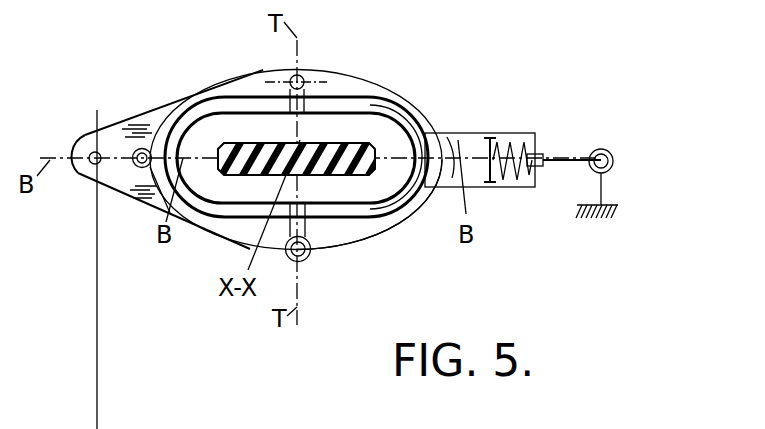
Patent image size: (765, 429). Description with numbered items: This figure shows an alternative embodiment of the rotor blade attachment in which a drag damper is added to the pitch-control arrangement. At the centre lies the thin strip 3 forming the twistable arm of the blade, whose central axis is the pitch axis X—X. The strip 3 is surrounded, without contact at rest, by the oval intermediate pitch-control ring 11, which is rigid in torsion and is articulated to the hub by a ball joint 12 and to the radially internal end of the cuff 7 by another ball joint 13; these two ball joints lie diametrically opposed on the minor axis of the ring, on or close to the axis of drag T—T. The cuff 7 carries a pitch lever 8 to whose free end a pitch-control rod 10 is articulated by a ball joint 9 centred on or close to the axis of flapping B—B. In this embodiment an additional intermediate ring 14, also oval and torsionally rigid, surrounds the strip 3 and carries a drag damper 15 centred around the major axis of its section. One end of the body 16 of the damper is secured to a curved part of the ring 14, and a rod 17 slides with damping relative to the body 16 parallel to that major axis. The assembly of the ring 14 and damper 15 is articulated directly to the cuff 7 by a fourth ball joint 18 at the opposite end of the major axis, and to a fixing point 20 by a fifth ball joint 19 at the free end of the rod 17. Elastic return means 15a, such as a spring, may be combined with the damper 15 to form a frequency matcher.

The thin strip 3 is at (233, 174).
The cuff 7 is at (381, 80).
The pitch lever 8 is at (84, 170).
The ball joint 9 is at (88, 153).
The pitch-control rod 10 is at (98, 348).
The intermediate pitch-control ring 11 is at (367, 213).
The ball joint 12 is at (300, 78).
The ball joint 13 is at (307, 256).
The additional intermediate ring 14 is at (403, 222).
The drag damper 15 is at (488, 130).
The elastic return means 15a is at (512, 140).
The body 16 is at (465, 131).
The rod 17 is at (569, 158).
The fourth ball joint 18 is at (142, 165).
The fifth ball joint 19 is at (612, 152).
The fixing point 20 is at (617, 205).